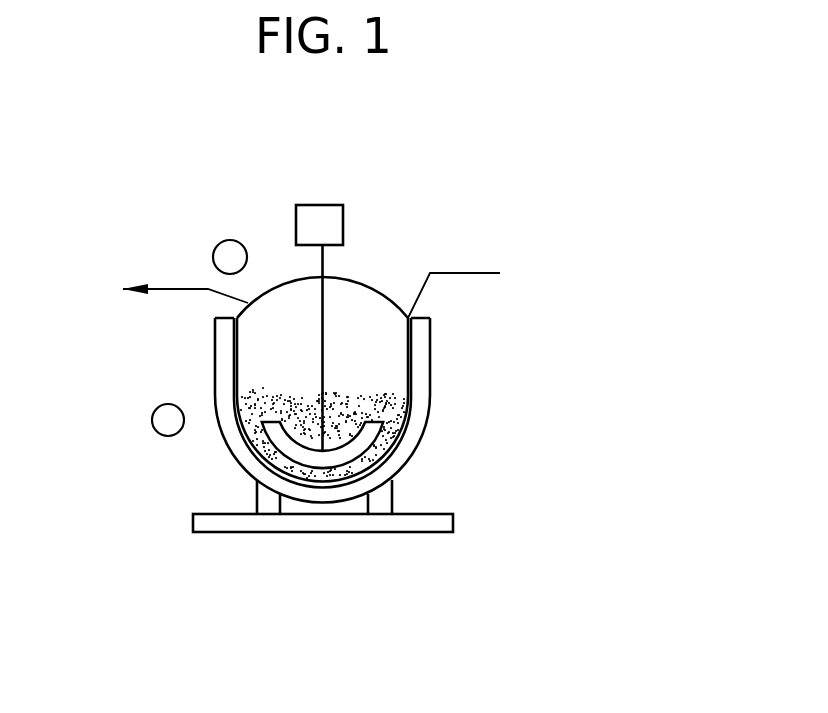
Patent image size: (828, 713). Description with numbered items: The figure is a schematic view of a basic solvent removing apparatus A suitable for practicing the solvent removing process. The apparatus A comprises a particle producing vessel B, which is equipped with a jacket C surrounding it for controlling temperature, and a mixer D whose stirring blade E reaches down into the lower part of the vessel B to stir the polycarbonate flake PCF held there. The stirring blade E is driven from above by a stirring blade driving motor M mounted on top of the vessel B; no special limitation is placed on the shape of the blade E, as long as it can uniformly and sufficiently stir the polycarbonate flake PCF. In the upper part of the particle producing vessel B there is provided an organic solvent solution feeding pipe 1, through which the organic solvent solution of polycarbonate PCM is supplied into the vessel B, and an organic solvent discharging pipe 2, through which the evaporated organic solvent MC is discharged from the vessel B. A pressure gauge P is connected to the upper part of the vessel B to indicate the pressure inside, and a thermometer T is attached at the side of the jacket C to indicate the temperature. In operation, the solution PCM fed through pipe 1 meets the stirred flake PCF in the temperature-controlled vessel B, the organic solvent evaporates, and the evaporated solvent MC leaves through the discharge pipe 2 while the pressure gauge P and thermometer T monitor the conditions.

The organic solvent solution feeding pipe 1 is at (471, 273).
The organic solvent solution exhaust pipe 2 is at (177, 288).
The solvent removing apparatus A is at (317, 312).
The particle producing vessel B is at (382, 301).
The jacket C is at (430, 388).
The mixer D is at (343, 222).
The blade of the mixer E is at (373, 432).
The motor of the mixer M is at (320, 227).
The pressure gauge P is at (262, 293).
The thermometer T is at (215, 420).
The evaporated organic solvent MC is at (105, 290).
The organic solvent solution of polycarbonate PCM is at (534, 272).
The polycarbonate flake PCF is at (322, 417).